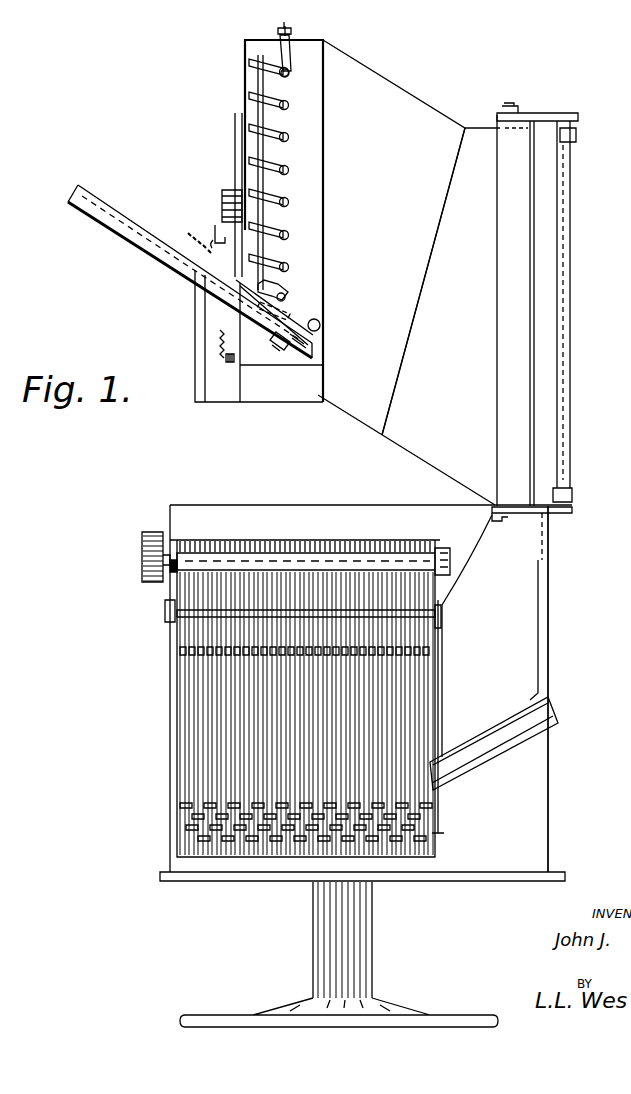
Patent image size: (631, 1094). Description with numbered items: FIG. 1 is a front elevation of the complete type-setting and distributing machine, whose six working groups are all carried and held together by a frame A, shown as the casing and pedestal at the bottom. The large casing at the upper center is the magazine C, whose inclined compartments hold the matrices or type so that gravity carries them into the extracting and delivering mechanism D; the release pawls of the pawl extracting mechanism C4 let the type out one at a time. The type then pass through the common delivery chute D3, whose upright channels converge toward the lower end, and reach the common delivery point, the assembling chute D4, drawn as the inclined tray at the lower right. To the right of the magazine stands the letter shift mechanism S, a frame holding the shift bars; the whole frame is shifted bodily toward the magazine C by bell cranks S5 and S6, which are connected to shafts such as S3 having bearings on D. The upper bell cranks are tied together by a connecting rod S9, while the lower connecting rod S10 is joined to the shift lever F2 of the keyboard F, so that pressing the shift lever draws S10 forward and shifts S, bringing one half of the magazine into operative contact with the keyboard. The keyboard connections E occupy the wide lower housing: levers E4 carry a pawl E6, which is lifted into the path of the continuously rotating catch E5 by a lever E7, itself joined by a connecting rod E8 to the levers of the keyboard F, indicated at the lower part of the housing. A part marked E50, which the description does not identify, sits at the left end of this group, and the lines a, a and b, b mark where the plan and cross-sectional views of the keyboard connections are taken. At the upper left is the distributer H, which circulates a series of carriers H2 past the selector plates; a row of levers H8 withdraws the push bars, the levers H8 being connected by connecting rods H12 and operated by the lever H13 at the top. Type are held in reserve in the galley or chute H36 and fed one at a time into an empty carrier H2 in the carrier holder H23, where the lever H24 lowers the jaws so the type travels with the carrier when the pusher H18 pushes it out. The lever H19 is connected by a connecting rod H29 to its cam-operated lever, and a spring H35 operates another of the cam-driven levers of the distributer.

The distributer H is at (318, 168).
The magazine C is at (392, 207).
The extracting and delivering mechanism D is at (468, 327).
The connecting rods H12 is at (261, 78).
The lever H8 is at (284, 234).
The lever H13 is at (292, 32).
The pusher H18 is at (234, 155).
The lever H19 is at (222, 193).
The connecting rod H29 is at (217, 251).
The pawl extracting mechanism C4 is at (203, 250).
The type galley or chute H36 is at (100, 229).
The carriers H2 is at (280, 352).
The carrier holder H23 is at (276, 342).
The lever H24 is at (320, 325).
The spring H35 is at (219, 358).
The letter shift mechanism S is at (526, 302).
The bell crank S5 is at (578, 121).
The connecting rod S9 is at (518, 107).
The shaft S3 is at (569, 418).
The bell crank S6 is at (574, 510).
The connecting rod S10 is at (516, 521).
The section line a a is at (162, 518).
The section line b b is at (443, 564).
The keyboard connections E is at (362, 522).
The frame A is at (372, 940).
The levers E4 is at (389, 541).
The rotating catch E5 is at (250, 562).
The knob E50 is at (140, 562).
The pawl E6 is at (175, 575).
The lever E7 is at (177, 628).
The connecting rod E8 is at (176, 651).
The keyboard F is at (174, 826).
The shift lever F2 is at (440, 818).
The common delivery chute D3 is at (545, 642).
The assembling chute D4 is at (494, 743).